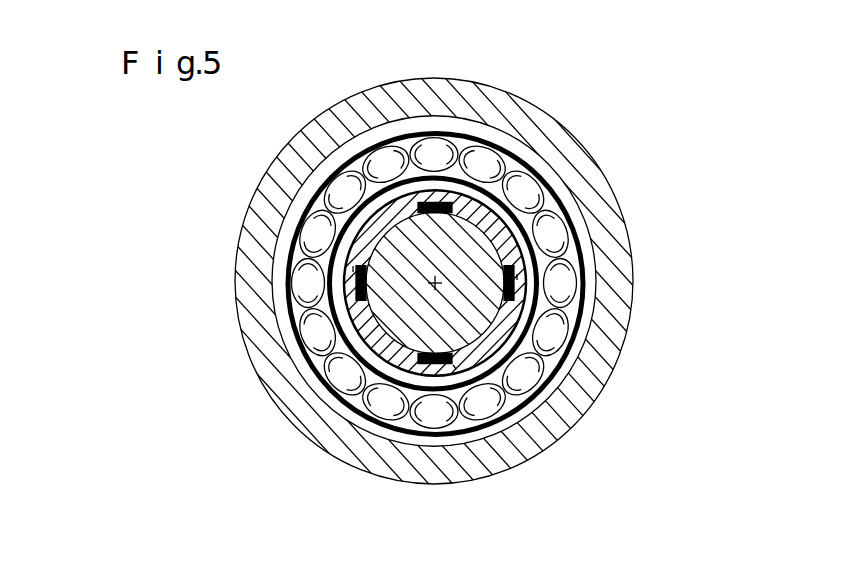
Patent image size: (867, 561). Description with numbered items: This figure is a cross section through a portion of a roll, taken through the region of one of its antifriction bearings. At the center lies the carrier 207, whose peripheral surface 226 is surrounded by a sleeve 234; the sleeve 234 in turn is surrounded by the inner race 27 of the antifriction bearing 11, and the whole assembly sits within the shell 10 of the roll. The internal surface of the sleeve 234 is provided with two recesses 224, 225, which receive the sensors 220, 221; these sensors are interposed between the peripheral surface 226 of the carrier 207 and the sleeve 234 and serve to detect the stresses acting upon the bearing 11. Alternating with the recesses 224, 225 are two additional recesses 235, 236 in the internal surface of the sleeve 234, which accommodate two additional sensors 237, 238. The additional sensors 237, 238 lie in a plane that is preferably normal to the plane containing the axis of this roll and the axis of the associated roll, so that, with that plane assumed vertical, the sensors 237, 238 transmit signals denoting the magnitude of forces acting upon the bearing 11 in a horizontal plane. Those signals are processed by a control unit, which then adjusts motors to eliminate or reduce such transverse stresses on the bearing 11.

The shell 10 is at (570, 166).
The antifriction bearing 11 is at (560, 232).
The inner race 27 is at (533, 260).
The carrier 207 is at (340, 213).
The sensor 220 is at (430, 203).
The sensor 221 is at (354, 406).
The recess 224 is at (447, 203).
The recess 225 is at (520, 422).
The peripheral surface 226 is at (477, 213).
The sleeve 234 is at (510, 325).
The additional recess 235 is at (261, 287).
The additional recess 236 is at (518, 287).
The additional sensor 237 is at (353, 266).
The additional sensor 238 is at (517, 280).